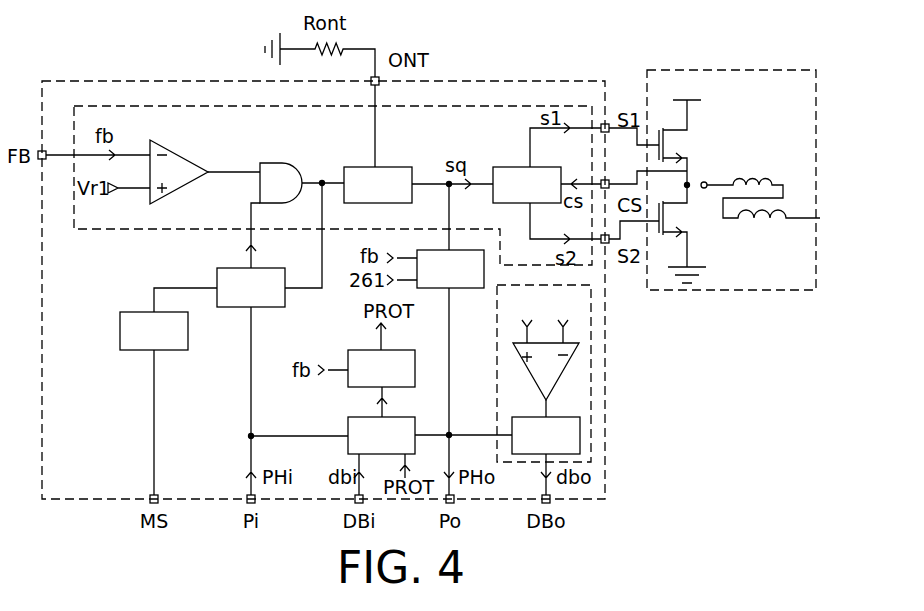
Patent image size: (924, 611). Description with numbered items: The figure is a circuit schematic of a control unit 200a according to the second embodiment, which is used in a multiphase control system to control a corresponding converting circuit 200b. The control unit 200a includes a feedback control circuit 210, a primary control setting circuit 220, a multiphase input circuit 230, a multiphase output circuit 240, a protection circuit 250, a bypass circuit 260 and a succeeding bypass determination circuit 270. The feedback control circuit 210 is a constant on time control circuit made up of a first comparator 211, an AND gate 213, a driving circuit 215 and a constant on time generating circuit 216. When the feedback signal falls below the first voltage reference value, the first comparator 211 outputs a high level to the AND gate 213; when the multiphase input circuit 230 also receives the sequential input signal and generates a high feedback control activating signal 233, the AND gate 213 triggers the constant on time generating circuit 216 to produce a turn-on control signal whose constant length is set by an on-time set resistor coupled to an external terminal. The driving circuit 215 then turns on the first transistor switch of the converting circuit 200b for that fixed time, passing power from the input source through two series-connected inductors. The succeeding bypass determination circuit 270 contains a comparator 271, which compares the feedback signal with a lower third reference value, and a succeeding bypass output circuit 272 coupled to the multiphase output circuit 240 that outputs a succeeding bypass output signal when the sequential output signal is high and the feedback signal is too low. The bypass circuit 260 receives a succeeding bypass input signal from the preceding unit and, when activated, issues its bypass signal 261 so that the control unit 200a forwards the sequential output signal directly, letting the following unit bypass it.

The control unit 200a is at (57, 88).
The converting circuit 200b is at (737, 72).
The feedback control circuit 210 is at (96, 228).
The first comparator 211 is at (175, 157).
The AND gate 213 is at (276, 167).
The driving circuit 215 is at (511, 196).
The constant on time generating circuit 216 is at (362, 196).
The primary control setting circuit 220 is at (138, 342).
The multiphase input circuit 230 is at (235, 299).
The feedback control activating signal 233 is at (235, 235).
The multiphase output circuit 240 is at (434, 280).
The protection circuit 250 is at (365, 380).
The bypass circuit 260 is at (365, 447).
The bypass signal 261 is at (363, 402).
The succeeding bypass determination circuit 270 is at (500, 343).
The comparator 271 is at (526, 363).
The succeeding bypass output circuit 272 is at (530, 447).